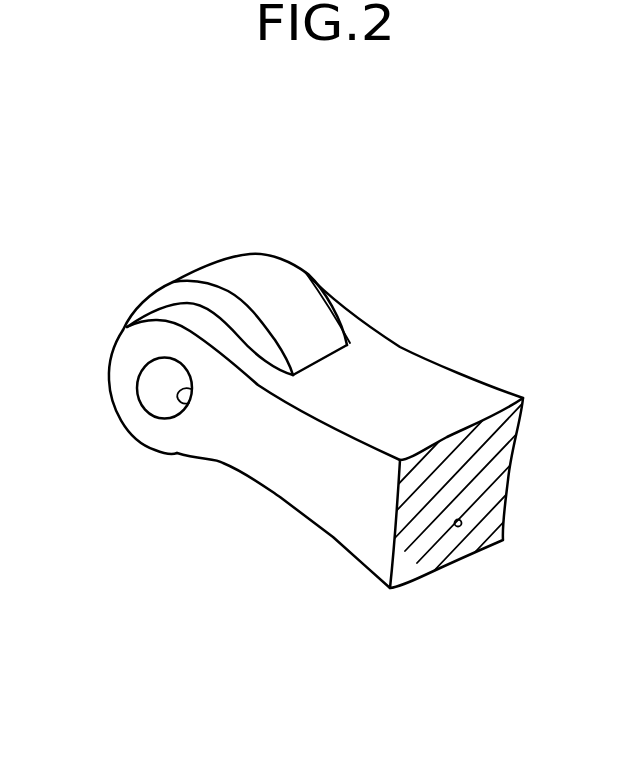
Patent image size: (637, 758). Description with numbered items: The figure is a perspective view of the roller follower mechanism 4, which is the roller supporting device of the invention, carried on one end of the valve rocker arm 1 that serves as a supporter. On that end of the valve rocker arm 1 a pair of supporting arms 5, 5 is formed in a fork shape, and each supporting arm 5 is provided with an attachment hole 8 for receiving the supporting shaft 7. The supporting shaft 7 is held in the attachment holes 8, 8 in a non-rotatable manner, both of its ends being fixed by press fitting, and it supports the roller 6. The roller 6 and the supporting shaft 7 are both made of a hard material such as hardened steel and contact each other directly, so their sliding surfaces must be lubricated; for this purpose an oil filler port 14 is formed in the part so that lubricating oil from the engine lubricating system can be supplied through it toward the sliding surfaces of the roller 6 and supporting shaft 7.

The valve rocker arm 1 is at (482, 380).
The roller follower mechanism 4 is at (321, 239).
The supporting arm 5 is at (346, 306).
The roller 6 is at (253, 283).
The supporting shaft 7 is at (159, 386).
The attachment hole 8 is at (189, 403).
The oil filler port 14 is at (462, 527).